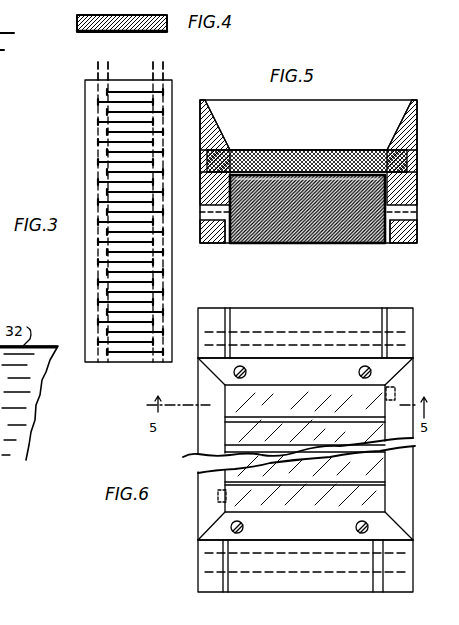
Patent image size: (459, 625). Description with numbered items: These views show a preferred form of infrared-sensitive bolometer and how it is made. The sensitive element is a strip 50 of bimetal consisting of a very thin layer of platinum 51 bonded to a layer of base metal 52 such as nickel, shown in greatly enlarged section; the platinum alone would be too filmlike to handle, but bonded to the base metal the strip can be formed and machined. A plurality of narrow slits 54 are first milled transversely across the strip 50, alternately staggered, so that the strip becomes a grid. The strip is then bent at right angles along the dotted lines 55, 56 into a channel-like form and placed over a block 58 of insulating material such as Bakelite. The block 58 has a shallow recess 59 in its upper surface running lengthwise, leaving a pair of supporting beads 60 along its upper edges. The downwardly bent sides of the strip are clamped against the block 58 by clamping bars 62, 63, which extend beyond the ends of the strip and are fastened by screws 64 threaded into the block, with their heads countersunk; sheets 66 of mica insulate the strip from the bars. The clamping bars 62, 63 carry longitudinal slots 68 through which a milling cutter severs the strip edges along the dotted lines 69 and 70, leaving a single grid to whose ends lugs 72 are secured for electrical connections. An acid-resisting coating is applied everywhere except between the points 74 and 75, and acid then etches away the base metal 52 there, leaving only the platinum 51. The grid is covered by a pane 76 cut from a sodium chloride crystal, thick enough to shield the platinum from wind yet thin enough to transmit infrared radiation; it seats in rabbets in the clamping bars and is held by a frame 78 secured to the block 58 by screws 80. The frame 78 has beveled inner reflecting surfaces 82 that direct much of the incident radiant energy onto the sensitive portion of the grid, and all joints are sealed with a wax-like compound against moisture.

In FIG. 3, the strip 50 is at (104, 212).
In FIG. 5, the strip 50 is at (283, 150).
In FIG. 4, the layer of platinum 51 is at (160, 33).
In FIG. 4, the layer of base metal 52 is at (145, 33).
In FIG. 3, the slits 54 is at (97, 241).
In FIG. 3, the dotted line 55 is at (110, 57).
In FIG. 3, the dotted line 56 is at (153, 70).
In FIG. 5, the block 58 is at (282, 232).
In FIG. 6, the block 58 is at (312, 316).
In FIG. 5, the shallow recess 59 is at (322, 177).
In FIG. 5, the supporting beads 60 is at (238, 178).
In FIG. 5, the clamping bar 62 is at (212, 244).
In FIG. 5, the clamping bar 63 is at (392, 244).
In FIG. 6, the screws 64 is at (263, 338).
In FIG. 5, the sheets of mica 66 is at (227, 244).
In FIG. 5, the slots 68 is at (206, 207).
In FIG. 6, the slots 68 is at (200, 385).
In FIG. 3, the dotted line 69 is at (96, 65).
In FIG. 3, the dotted line 70 is at (163, 68).
In FIG. 6, the lugs 72 is at (398, 385).
In FIG. 5, the point 74 is at (250, 148).
In FIG. 5, the point 75 is at (366, 127).
In FIG. 5, the pane 76 is at (316, 150).
In FIG. 5, the frame 78 is at (206, 100).
In FIG. 6, the frame 78 is at (205, 418).
In FIG. 6, the screws 80 is at (357, 527).
In FIG. 5, the beveled inner reflecting surfaces 82 is at (222, 118).